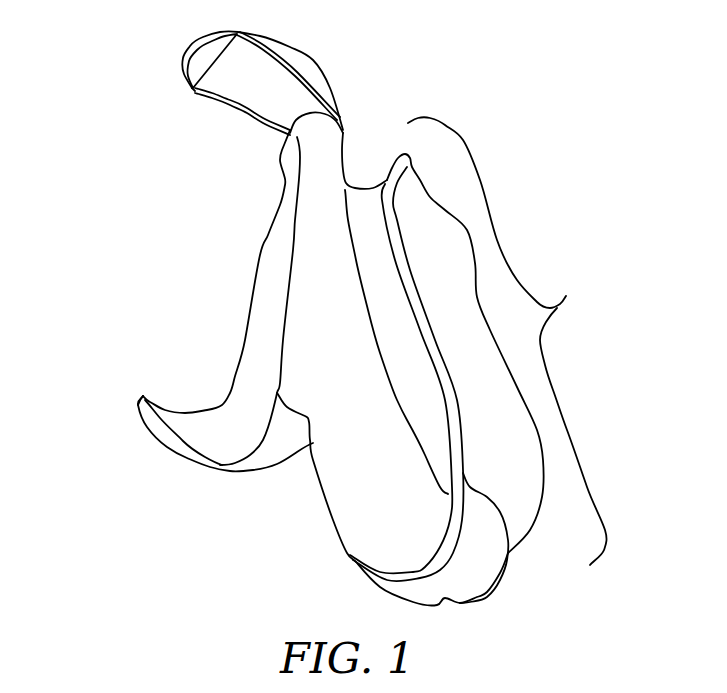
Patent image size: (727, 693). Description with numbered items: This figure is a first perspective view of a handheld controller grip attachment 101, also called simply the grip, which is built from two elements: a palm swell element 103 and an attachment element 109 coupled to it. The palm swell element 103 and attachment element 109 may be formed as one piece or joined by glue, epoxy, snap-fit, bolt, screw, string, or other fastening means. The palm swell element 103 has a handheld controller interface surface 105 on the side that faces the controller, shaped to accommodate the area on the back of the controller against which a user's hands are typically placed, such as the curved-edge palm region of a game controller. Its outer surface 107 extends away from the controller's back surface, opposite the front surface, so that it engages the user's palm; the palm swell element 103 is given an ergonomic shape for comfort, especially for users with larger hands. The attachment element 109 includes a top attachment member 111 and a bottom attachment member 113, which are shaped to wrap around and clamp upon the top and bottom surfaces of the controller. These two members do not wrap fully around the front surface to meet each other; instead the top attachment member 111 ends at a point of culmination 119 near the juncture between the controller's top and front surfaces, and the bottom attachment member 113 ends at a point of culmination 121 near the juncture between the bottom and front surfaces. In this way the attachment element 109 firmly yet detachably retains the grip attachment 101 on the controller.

The handheld controller grip attachment 101 is at (497, 102).
The palm swell element 103 is at (566, 296).
The handheld controller interface surface 105 is at (413, 480).
The outer surface 107 is at (475, 263).
The attachment element 109 is at (160, 0).
The top attachment member 111 is at (310, 47).
The bottom attachment member 113 is at (198, 463).
The point of culmination 119 is at (193, 90).
The point of culmination 121 is at (143, 393).